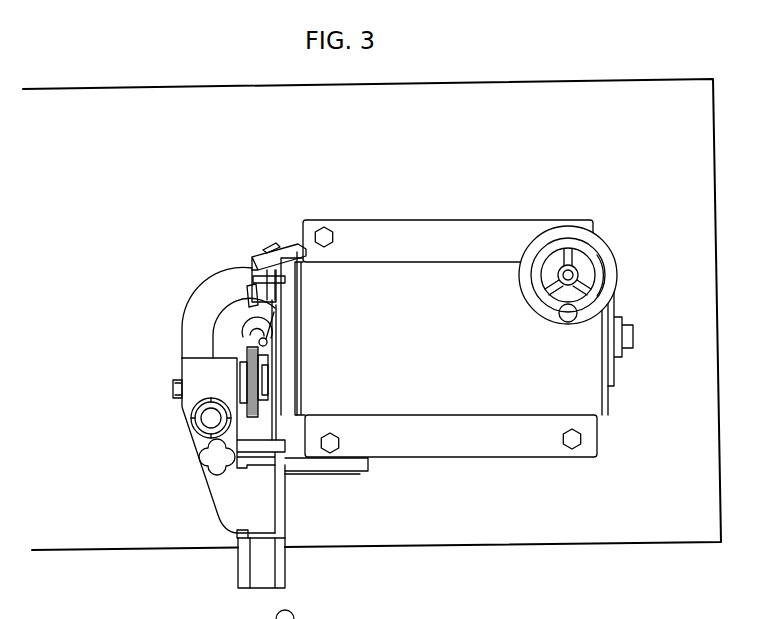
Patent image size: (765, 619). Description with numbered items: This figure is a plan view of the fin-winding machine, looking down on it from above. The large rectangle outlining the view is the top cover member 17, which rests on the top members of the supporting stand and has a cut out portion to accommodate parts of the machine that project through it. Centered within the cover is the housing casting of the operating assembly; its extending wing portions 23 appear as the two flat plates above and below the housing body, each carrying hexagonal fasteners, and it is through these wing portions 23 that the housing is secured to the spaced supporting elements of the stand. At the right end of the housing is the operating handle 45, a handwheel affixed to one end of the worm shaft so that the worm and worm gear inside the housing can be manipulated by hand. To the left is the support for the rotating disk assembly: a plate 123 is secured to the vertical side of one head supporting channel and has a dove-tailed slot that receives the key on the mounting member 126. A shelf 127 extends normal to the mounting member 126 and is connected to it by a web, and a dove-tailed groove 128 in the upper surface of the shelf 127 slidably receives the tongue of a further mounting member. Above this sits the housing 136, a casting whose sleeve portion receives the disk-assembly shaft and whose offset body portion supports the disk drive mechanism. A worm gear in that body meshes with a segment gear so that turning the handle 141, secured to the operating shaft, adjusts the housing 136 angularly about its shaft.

The top cover member 17 is at (575, 152).
The wing portions 23 is at (461, 247).
The operating handle 45 is at (613, 253).
The housing 136 is at (196, 421).
The handle 141 is at (211, 467).
The plate 123 is at (370, 468).
The mounting member 126 is at (325, 472).
The shelf 127 is at (242, 575).
The dove-tailed groove 128 is at (267, 578).